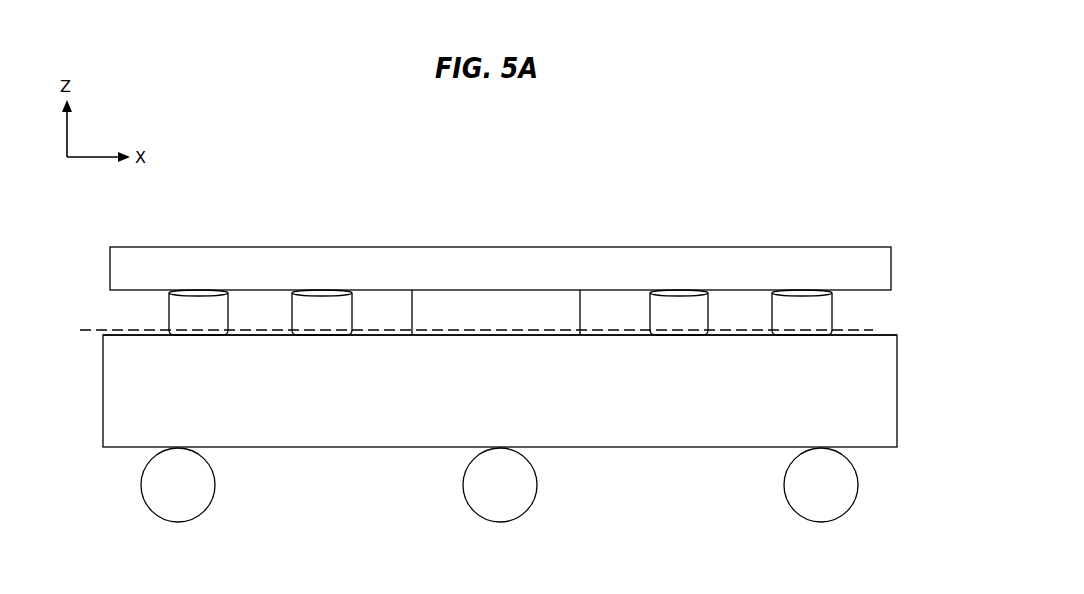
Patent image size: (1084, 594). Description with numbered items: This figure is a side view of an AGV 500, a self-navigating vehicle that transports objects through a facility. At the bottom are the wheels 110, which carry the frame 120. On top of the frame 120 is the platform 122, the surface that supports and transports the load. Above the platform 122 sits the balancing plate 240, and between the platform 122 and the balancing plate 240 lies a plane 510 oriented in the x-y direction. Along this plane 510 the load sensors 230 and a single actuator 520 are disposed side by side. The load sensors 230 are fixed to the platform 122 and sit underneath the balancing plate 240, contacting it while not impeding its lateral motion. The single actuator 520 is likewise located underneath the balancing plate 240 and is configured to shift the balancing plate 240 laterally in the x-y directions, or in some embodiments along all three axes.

The AGV 500 is at (320, 162).
The plane 510 is at (106, 323).
The balancing plate 240 is at (603, 280).
The single actuator 520 is at (512, 321).
The load sensors 230 is at (214, 324).
The frame 120 is at (878, 390).
The platform 122 is at (888, 332).
The wheels 110 is at (213, 500).